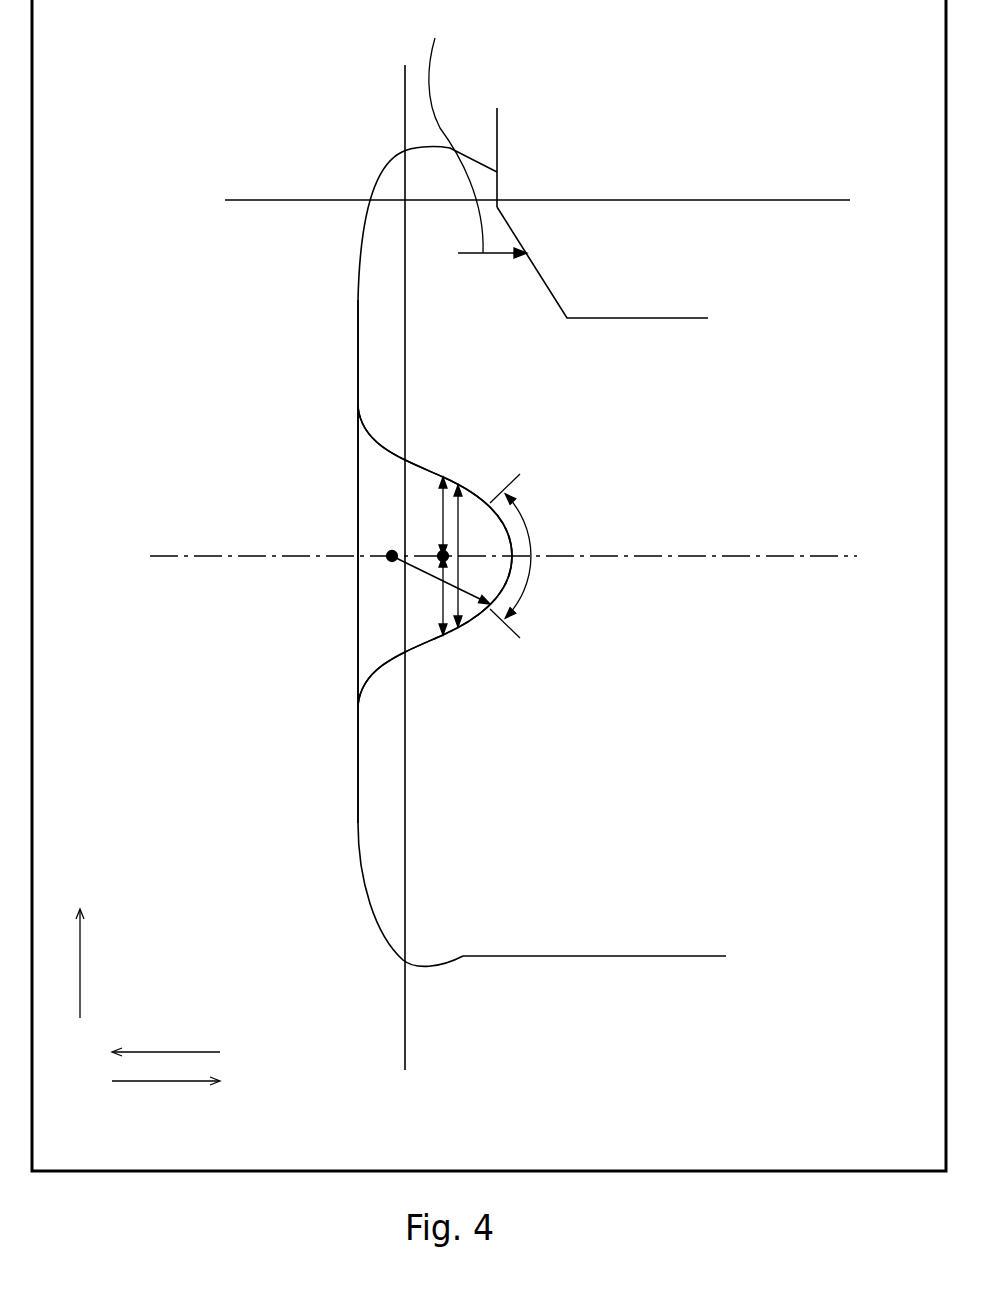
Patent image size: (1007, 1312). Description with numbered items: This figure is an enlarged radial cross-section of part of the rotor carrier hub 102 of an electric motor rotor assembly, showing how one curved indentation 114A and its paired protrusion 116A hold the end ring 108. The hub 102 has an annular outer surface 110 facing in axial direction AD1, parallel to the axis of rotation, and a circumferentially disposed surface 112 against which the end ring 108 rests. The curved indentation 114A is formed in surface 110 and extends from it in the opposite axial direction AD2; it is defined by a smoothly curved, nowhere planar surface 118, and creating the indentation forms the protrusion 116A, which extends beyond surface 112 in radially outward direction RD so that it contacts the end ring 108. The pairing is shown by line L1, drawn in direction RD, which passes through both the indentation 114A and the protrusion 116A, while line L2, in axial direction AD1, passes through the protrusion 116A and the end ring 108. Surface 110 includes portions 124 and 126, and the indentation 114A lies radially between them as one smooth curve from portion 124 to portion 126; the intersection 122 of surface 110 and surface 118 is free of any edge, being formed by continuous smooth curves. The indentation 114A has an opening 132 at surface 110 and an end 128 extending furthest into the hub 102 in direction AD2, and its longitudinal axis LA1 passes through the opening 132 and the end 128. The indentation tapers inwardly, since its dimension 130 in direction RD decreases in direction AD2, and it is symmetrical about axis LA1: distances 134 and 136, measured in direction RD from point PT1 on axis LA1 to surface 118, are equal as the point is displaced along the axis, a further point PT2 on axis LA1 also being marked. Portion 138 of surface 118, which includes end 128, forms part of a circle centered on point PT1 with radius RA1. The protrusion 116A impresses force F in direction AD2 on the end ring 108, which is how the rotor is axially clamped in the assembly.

The rotor carrier hub 102 is at (681, 970).
The end ring 108 is at (486, 123).
The annular outer surface 110 is at (347, 836).
The circumferentially disposed surface 112 is at (628, 318).
The curved indentation 114A is at (339, 462).
The protrusion 116A is at (385, 165).
The surface 118 is at (417, 648).
The intersection 122 is at (368, 430).
The portion 124 is at (358, 307).
The portion 126 is at (358, 806).
The end 128 is at (510, 540).
The dimension 130 is at (460, 563).
The opening 132 is at (358, 575).
The distance 134 is at (443, 610).
The distance 136 is at (443, 502).
The portion of surface 138 is at (523, 507).
The force F is at (478, 132).
The line L1 is at (405, 1017).
The line L2 is at (798, 200).
The longitudinal axis LA1 is at (818, 557).
The point PT1 is at (443, 556).
The second point PT2 is at (392, 556).
The radius RA1 is at (470, 600).
The radially outward direction RD is at (80, 975).
The axial direction AD1 is at (155, 1052).
The axial direction AD2 is at (155, 1081).